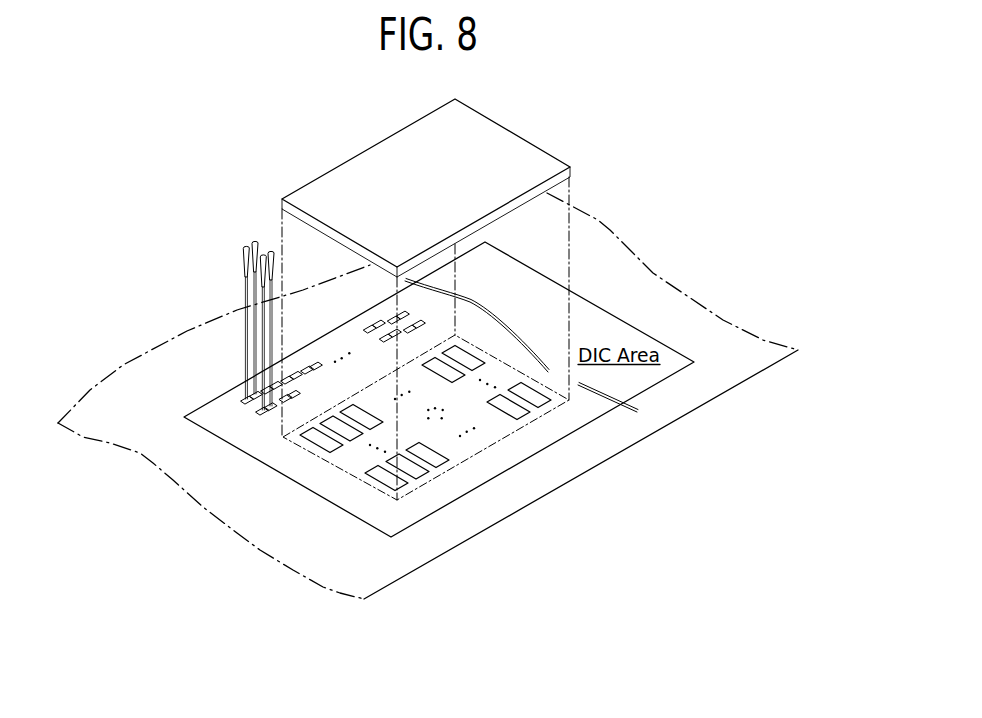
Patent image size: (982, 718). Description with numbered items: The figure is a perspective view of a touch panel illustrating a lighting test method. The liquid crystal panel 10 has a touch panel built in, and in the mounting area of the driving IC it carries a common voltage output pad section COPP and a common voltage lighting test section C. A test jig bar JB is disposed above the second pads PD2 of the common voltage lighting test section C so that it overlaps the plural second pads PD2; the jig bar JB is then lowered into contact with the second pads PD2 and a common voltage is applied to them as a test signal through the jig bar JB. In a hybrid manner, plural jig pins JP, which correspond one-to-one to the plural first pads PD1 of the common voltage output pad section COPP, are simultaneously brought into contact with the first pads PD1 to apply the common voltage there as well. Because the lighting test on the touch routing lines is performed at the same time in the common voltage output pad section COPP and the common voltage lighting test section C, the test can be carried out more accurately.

The liquid crystal panel 10 is at (737, 364).
The jig bar JB is at (503, 147).
The jig pins JP is at (246, 246).
The common voltage output pad section COPP is at (241, 421).
The first pads PD1 is at (262, 415).
The second pads PD2 is at (320, 447).
The common voltage lighting test section C is at (355, 499).